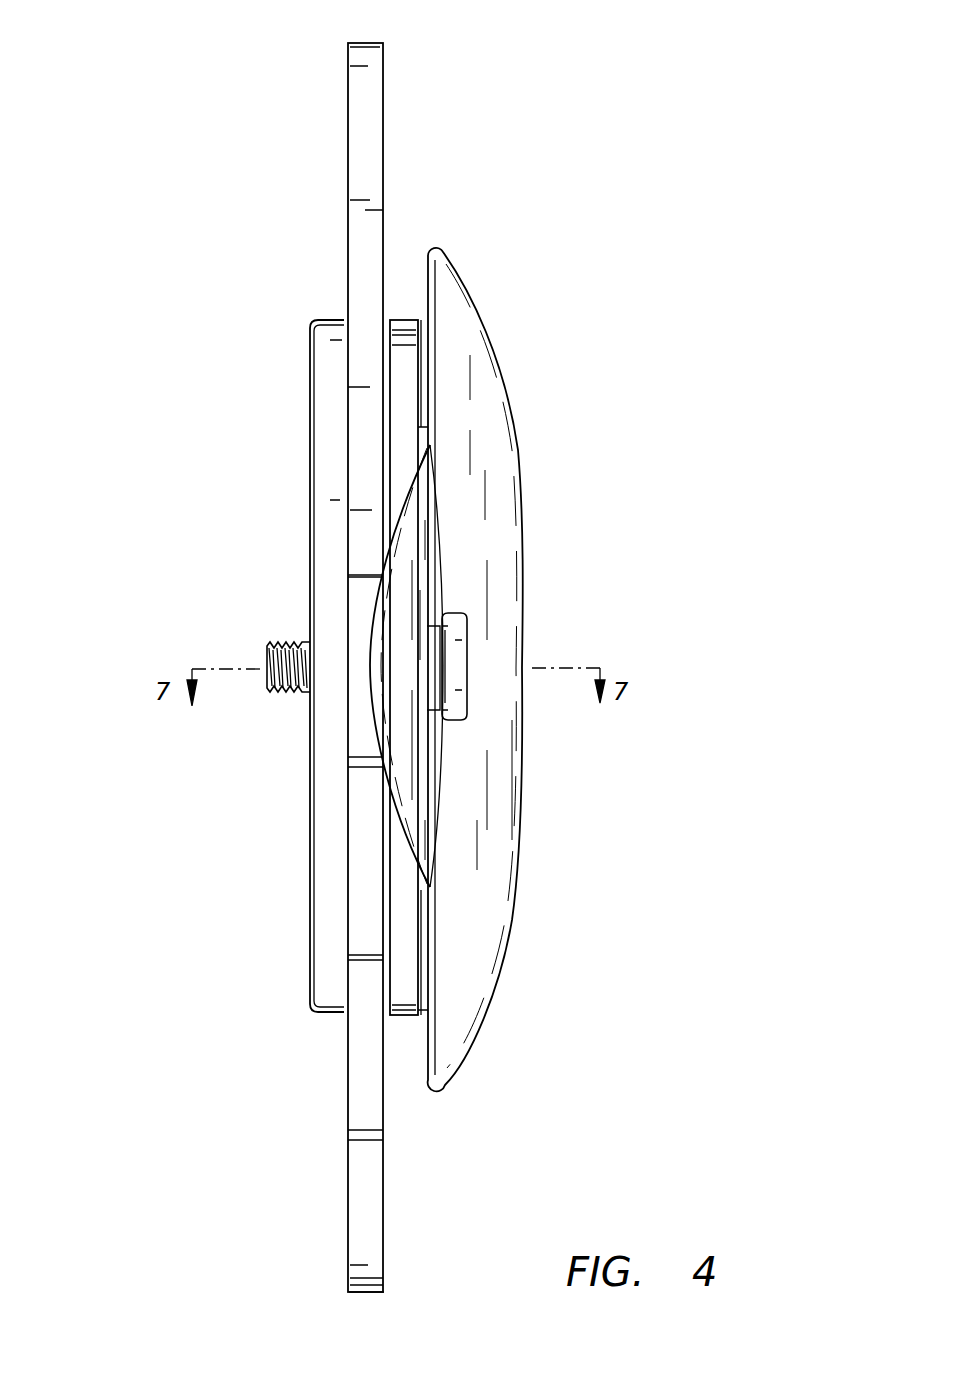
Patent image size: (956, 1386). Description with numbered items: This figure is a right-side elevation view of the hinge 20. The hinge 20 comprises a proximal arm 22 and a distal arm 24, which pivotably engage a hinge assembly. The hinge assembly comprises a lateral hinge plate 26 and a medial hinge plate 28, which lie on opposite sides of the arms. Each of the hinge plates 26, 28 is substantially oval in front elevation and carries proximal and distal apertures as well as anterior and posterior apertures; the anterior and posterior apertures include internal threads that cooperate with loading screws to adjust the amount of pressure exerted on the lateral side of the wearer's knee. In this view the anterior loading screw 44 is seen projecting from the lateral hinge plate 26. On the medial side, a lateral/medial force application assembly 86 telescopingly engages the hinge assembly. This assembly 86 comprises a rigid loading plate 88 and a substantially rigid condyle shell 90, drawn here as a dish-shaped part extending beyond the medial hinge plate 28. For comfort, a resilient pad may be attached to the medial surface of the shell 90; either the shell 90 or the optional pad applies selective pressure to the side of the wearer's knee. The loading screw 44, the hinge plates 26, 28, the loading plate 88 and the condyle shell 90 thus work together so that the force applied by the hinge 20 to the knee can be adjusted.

The hinge 20 is at (208, 352).
The proximal arm 22 is at (366, 108).
The distal arm 24 is at (369, 1255).
The lateral hinge plate 26 is at (332, 333).
The medial hinge plate 28 is at (398, 330).
The anterior loading screw 44 is at (287, 693).
The lateral/medial force application assembly 86 is at (452, 1108).
The rigid loading plate 88 is at (400, 735).
The condyle shell 90 is at (458, 357).